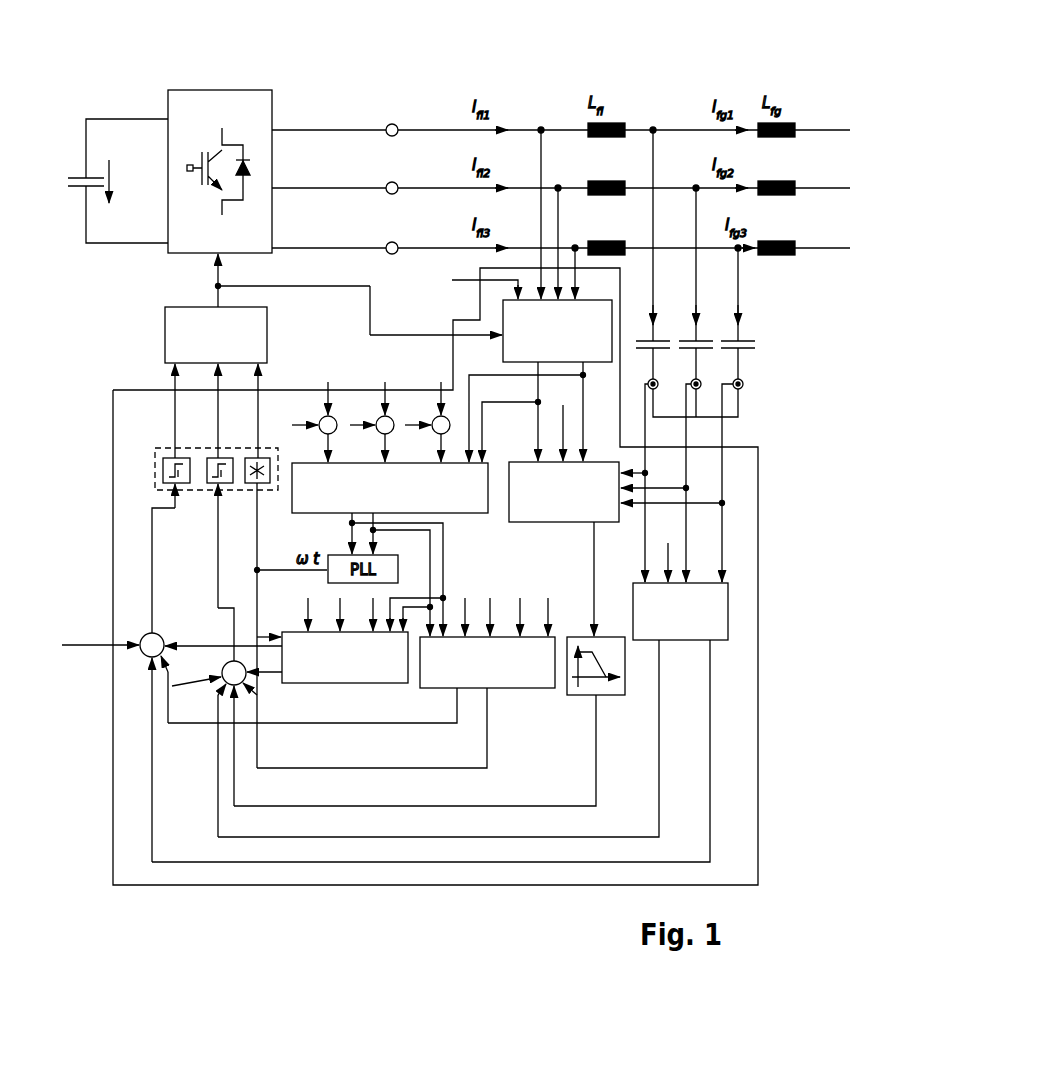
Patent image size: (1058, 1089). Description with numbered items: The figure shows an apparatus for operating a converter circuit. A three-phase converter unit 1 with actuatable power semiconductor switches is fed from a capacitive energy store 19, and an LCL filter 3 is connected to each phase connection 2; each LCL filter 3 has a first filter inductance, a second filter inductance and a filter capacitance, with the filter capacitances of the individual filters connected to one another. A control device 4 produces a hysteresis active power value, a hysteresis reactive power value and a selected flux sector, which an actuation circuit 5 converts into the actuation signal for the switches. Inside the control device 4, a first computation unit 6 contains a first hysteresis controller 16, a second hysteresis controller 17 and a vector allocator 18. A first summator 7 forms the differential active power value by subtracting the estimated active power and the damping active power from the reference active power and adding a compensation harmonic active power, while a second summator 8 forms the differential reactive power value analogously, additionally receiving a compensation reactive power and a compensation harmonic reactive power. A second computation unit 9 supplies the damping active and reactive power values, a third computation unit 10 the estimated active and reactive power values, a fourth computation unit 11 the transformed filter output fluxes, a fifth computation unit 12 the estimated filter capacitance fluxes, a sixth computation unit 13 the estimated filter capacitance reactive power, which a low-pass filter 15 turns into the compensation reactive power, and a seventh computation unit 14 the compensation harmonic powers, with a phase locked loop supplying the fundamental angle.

The converter unit 1 is at (232, 90).
The phase connection 2 is at (390, 242).
The LCL filter 3 is at (644, 175).
The control device 4 is at (758, 447).
The actuation circuit 5 is at (207, 356).
The first computation unit 6 is at (154, 387).
The first summator 7 is at (148, 633).
The second summator 8 is at (226, 663).
The second computation unit 9 is at (443, 689).
The third computation unit 10 is at (332, 625).
The fourth computation unit 11 is at (385, 498).
The fifth computation unit 12 is at (415, 363).
The sixth computation unit 13 is at (617, 549).
The seventh computation unit 14 is at (364, 668).
The low-pass filter 15 is at (630, 641).
The first hysteresis controller 16 is at (163, 456).
The second hysteresis controller 17 is at (207, 456).
The vector allocator 18 is at (247, 456).
The capacitive energy store 19 is at (75, 165).